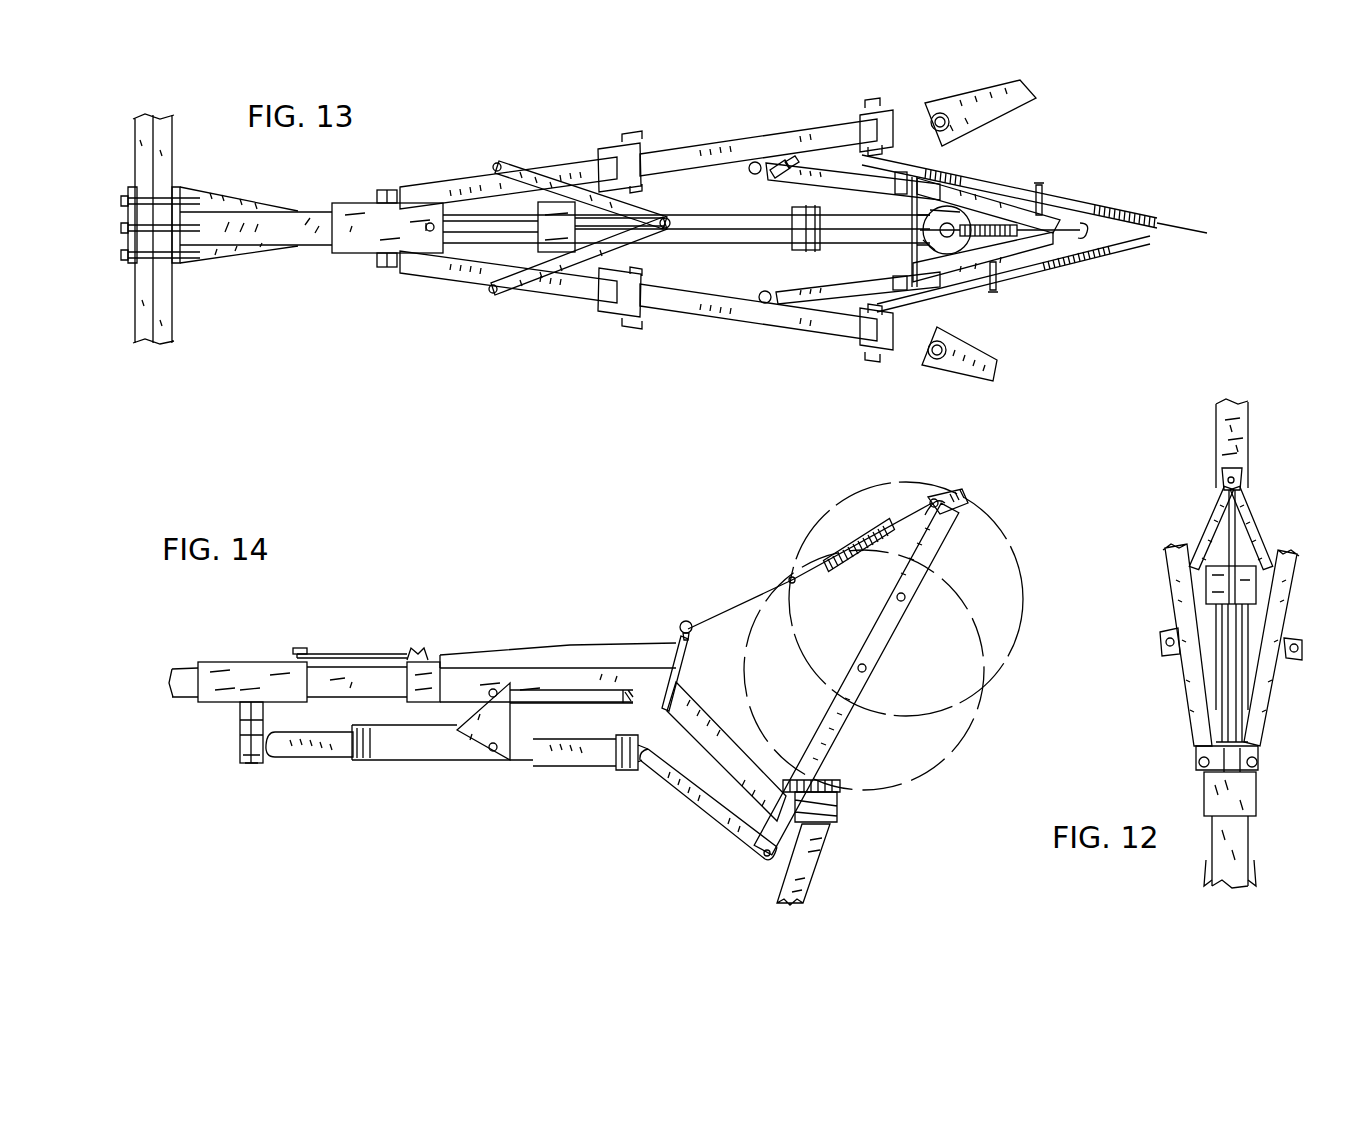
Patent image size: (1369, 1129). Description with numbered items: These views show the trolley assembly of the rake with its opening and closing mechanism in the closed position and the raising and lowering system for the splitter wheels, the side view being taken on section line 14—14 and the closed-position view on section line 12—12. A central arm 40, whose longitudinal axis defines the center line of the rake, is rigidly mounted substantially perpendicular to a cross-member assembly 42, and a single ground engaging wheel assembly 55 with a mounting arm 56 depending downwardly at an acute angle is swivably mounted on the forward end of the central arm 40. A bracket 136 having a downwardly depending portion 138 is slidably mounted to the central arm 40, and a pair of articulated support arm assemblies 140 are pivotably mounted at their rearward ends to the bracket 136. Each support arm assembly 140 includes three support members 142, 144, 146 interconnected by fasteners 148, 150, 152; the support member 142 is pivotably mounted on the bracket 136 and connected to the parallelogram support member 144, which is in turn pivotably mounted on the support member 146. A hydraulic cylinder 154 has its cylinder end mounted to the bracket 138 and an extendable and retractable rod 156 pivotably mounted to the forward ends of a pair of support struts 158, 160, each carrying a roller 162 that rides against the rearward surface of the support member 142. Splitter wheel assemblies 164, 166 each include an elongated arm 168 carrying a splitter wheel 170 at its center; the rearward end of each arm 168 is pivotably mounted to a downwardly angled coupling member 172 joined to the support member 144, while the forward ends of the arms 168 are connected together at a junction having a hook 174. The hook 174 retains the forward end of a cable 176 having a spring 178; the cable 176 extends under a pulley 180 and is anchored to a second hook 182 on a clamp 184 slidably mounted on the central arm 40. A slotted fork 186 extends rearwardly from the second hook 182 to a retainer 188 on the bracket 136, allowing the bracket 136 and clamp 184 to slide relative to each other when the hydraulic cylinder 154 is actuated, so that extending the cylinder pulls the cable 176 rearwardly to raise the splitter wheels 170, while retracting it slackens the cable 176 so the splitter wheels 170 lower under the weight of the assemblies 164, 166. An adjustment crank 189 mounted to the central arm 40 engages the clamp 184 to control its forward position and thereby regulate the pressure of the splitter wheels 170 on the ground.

In FIG. 14, the section line 12 is at (570, 805).
In FIG. 13, the section line 14 is at (393, 312).
In FIG. 13, the central arm 40 is at (310, 237).
In FIG. 14, the central arm 40 is at (563, 650).
In FIG. 12, the central arm 40 is at (1236, 843).
In FIG. 13, the cross-member assembly 42 is at (182, 168).
In FIG. 14, the ground engaging wheel assembly 55 is at (851, 835).
In FIG. 14, the mounting arm 56 is at (720, 730).
In FIG. 13, the bracket 136 is at (413, 244).
In FIG. 14, the bracket 136 is at (253, 670).
In FIG. 12, the bracket 136 is at (1240, 794).
In FIG. 13, the downwardly depending portion 138 is at (387, 228).
In FIG. 14, the downwardly depending portion 138 is at (248, 710).
In FIG. 13, the articulated support arm assembly 140 is at (709, 113).
In FIG. 13, the support member 142 is at (477, 183).
In FIG. 14, the support member 142 is at (280, 748).
In FIG. 12, the support member 142 is at (1188, 706).
In FIG. 13, the parallelogram support member 144 is at (740, 140).
In FIG. 14, the parallelogram support member 144 is at (582, 750).
In FIG. 13, the support member 146 is at (980, 97).
In FIG. 13, the fastener 148 is at (632, 144).
In FIG. 13, the fastener 150 is at (870, 110).
In FIG. 13, the fastener 152 is at (940, 113).
In FIG. 12, the hydraulic cylinder 154 is at (1236, 654).
In FIG. 12, the extendable and retractable rod 156 is at (1256, 566).
In FIG. 13, the support strut 158 is at (520, 173).
In FIG. 12, the support strut 158 is at (1258, 538).
In FIG. 13, the support strut 160 is at (507, 293).
In FIG. 12, the support strut 160 is at (1208, 530).
In FIG. 12, the roller 162 is at (1172, 654).
In FIG. 13, the splitter wheel assembly 164 is at (1106, 267).
In FIG. 14, the splitter wheel assembly 164 is at (1023, 513).
In FIG. 13, the splitter wheel assembly 166 is at (1066, 178).
In FIG. 13, the elongated arm 168 is at (1060, 217).
In FIG. 14, the elongated arm 168 is at (862, 635).
In FIG. 13, the splitter wheel 170 is at (962, 177).
In FIG. 14, the splitter wheel 170 is at (968, 745).
In FIG. 13, the coupling member 172 is at (818, 178).
In FIG. 14, the coupling member 172 is at (703, 825).
In FIG. 14, the hook 174 is at (950, 495).
In FIG. 13, the cable 176 is at (767, 228).
In FIG. 14, the cable 176 is at (650, 640).
In FIG. 13, the spring 178 is at (993, 228).
In FIG. 14, the spring 178 is at (828, 563).
In FIG. 13, the pulley 180 is at (812, 252).
In FIG. 14, the pulley 180 is at (688, 620).
In FIG. 13, the second hook 182 is at (610, 247).
In FIG. 14, the second hook 182 is at (409, 648).
In FIG. 13, the clamp 184 is at (603, 212).
In FIG. 14, the clamp 184 is at (433, 673).
In FIG. 12, the clamp 184 is at (1246, 594).
In FIG. 13, the slotted fork 186 is at (458, 221).
In FIG. 14, the slotted fork 186 is at (393, 630).
In FIG. 13, the retainer 188 is at (430, 223).
In FIG. 14, the retainer 188 is at (300, 648).
In FIG. 13, the adjustment crank 189 is at (782, 166).